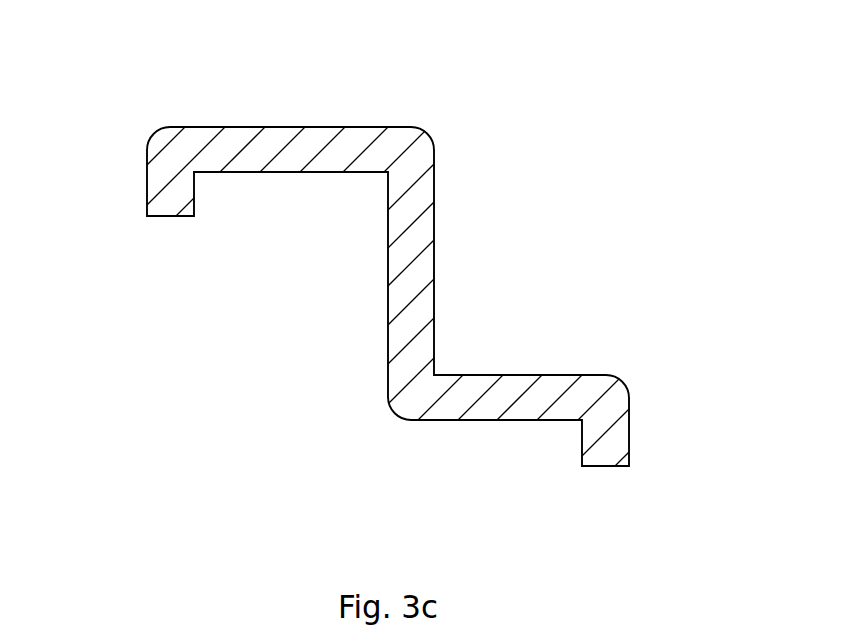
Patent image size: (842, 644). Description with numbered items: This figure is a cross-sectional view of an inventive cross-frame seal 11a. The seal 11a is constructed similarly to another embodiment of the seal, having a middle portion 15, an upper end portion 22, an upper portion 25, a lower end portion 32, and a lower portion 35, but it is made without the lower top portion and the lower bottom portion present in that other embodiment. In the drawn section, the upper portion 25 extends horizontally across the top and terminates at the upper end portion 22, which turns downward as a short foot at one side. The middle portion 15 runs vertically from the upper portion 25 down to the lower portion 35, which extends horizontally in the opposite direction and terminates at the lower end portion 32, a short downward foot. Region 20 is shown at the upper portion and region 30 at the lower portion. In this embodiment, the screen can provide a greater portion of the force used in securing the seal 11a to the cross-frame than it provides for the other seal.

The seal 11a is at (177, 300).
The upper flange 20 is at (368, 127).
The upper portion 25 is at (268, 148).
The upper end portion 22 is at (165, 182).
The middle portion 15 is at (415, 242).
The lower flange 30 is at (573, 373).
The lower portion 35 is at (502, 397).
The lower end portion 32 is at (610, 443).